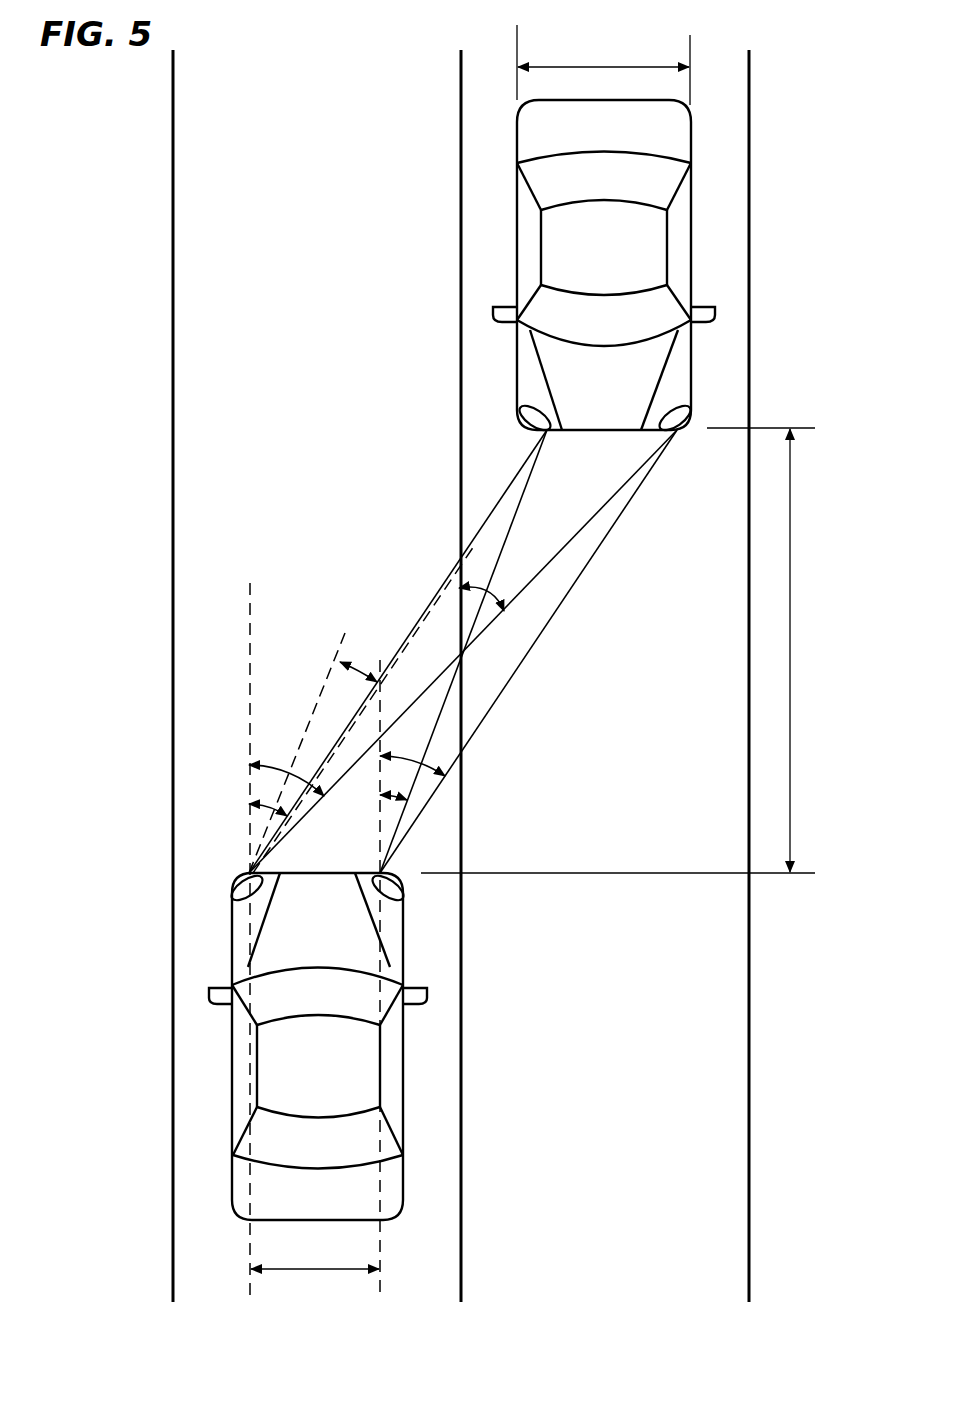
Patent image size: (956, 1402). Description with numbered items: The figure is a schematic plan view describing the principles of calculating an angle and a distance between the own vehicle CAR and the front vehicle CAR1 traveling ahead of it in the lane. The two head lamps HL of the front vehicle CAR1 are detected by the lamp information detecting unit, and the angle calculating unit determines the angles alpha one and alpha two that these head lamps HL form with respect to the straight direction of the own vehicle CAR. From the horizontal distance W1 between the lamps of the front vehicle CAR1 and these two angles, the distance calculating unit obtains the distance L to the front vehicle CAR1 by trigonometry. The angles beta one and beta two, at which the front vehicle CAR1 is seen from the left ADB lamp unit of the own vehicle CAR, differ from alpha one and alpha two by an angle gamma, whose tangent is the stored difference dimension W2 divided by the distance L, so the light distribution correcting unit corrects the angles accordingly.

The front vehicle CAR1 is at (694, 268).
The own vehicle CAR is at (407, 1090).
The head lamp HL is at (532, 415).
The distance between the lamps W1 is at (603, 65).
The difference dimension W2 is at (315, 1288).
The distance to the front vehicle L is at (618, 650).